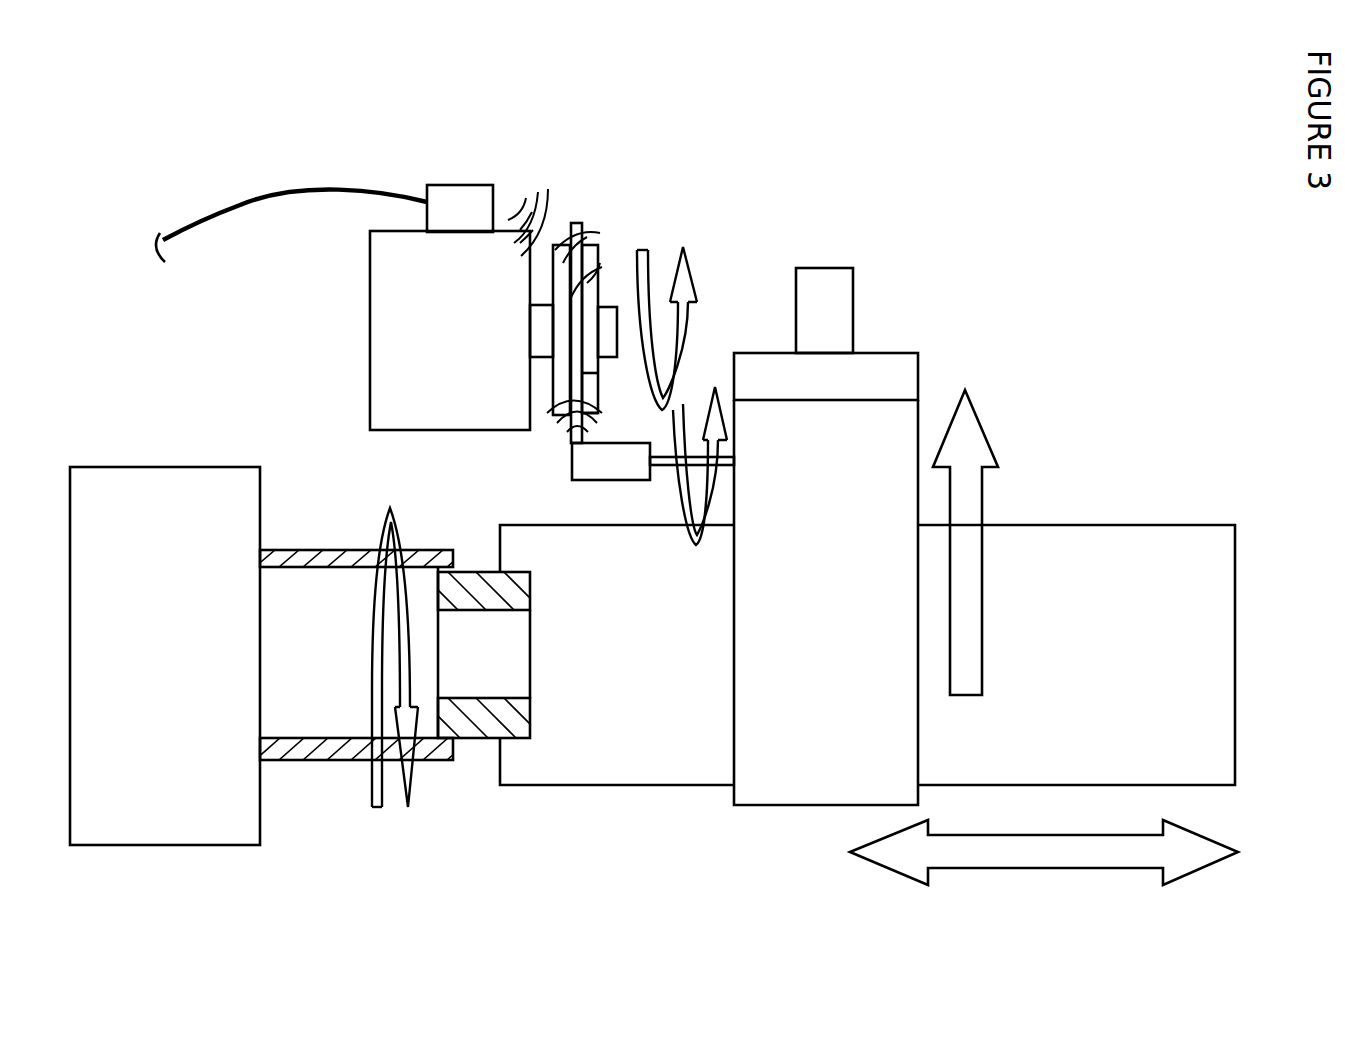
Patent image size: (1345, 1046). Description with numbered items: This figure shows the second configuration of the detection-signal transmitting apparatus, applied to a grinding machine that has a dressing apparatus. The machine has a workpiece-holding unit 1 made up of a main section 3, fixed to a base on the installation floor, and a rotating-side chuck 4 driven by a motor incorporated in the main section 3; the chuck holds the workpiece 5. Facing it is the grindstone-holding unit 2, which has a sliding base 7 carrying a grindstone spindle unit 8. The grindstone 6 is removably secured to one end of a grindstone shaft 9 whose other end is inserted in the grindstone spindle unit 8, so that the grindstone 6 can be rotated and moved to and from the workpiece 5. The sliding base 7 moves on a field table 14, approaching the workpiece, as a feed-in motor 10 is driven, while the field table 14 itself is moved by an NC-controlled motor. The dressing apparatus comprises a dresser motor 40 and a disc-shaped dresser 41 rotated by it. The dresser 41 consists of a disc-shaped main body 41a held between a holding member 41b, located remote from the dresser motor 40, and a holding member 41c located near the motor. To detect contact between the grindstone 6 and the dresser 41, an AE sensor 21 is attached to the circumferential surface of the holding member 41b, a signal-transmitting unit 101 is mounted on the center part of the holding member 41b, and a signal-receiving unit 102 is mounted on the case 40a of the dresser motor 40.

The workpiece-holding unit 1 is at (260, 410).
The main section 3 is at (199, 482).
The rotating-side chuck 4 is at (275, 548).
The workpiece 5 is at (483, 718).
The grindstone-holding unit 2 is at (1027, 237).
The sliding base 7 is at (900, 378).
The grindstone spindle unit 8 is at (897, 423).
The feed-in motor 10 is at (840, 337).
The field table 14 is at (1222, 680).
The grindstone 6 is at (616, 465).
The grindstone shaft 9 is at (732, 525).
The AE sensor 21 is at (597, 392).
The signal-transmitting unit 101 is at (612, 305).
The dresser 41 is at (672, 101).
The main body 41a is at (577, 223).
The holding member 41b is at (600, 292).
The holding member 41c is at (555, 258).
The dresser motor 40 is at (440, 432).
The case 40a is at (383, 290).
The signal-receiving unit 102 is at (452, 195).